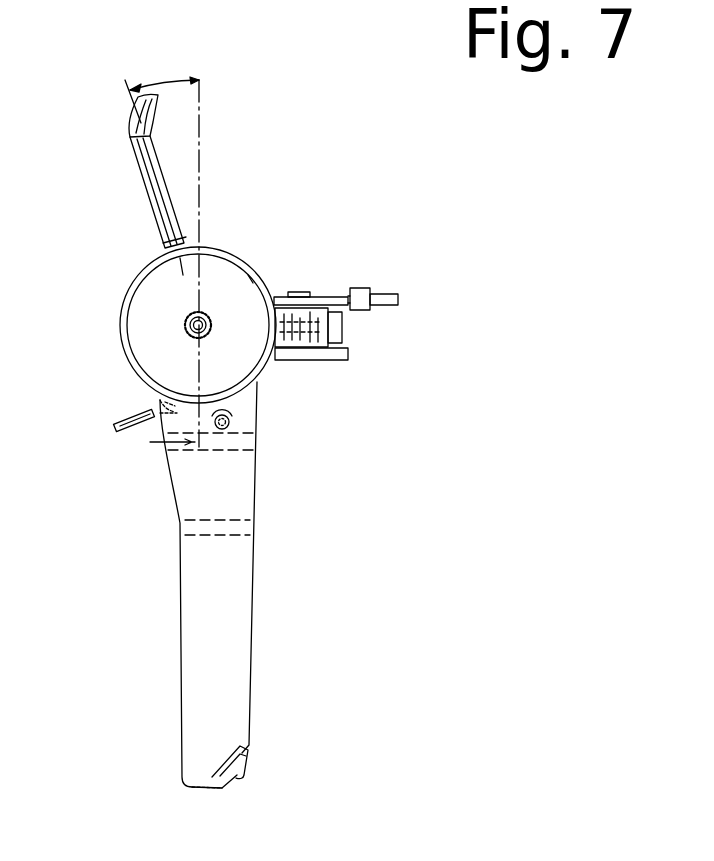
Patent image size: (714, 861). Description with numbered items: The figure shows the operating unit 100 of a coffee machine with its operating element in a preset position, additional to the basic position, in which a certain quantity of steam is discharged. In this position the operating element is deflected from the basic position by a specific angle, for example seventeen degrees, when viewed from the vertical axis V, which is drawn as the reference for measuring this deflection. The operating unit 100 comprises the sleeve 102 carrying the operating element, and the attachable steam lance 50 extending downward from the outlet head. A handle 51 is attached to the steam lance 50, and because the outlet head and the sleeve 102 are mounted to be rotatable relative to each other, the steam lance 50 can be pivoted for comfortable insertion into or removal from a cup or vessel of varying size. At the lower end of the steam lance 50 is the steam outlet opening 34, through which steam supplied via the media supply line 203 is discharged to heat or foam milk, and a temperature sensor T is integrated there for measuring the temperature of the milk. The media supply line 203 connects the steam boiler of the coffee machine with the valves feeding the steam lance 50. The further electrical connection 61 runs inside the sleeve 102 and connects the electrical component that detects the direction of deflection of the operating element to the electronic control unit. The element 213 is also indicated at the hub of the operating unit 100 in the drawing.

The operating unit 100 is at (117, 285).
The second sleeve 102 is at (118, 337).
The hub 213 is at (212, 332).
The media supply line 203 is at (343, 328).
The further electrical connection 61 is at (360, 300).
The handle 51 is at (115, 424).
The steam lance 50 is at (223, 565).
The temperature sensor T is at (237, 767).
The steam outlet opening 34 is at (176, 806).
The vertical axis V is at (172, 73).